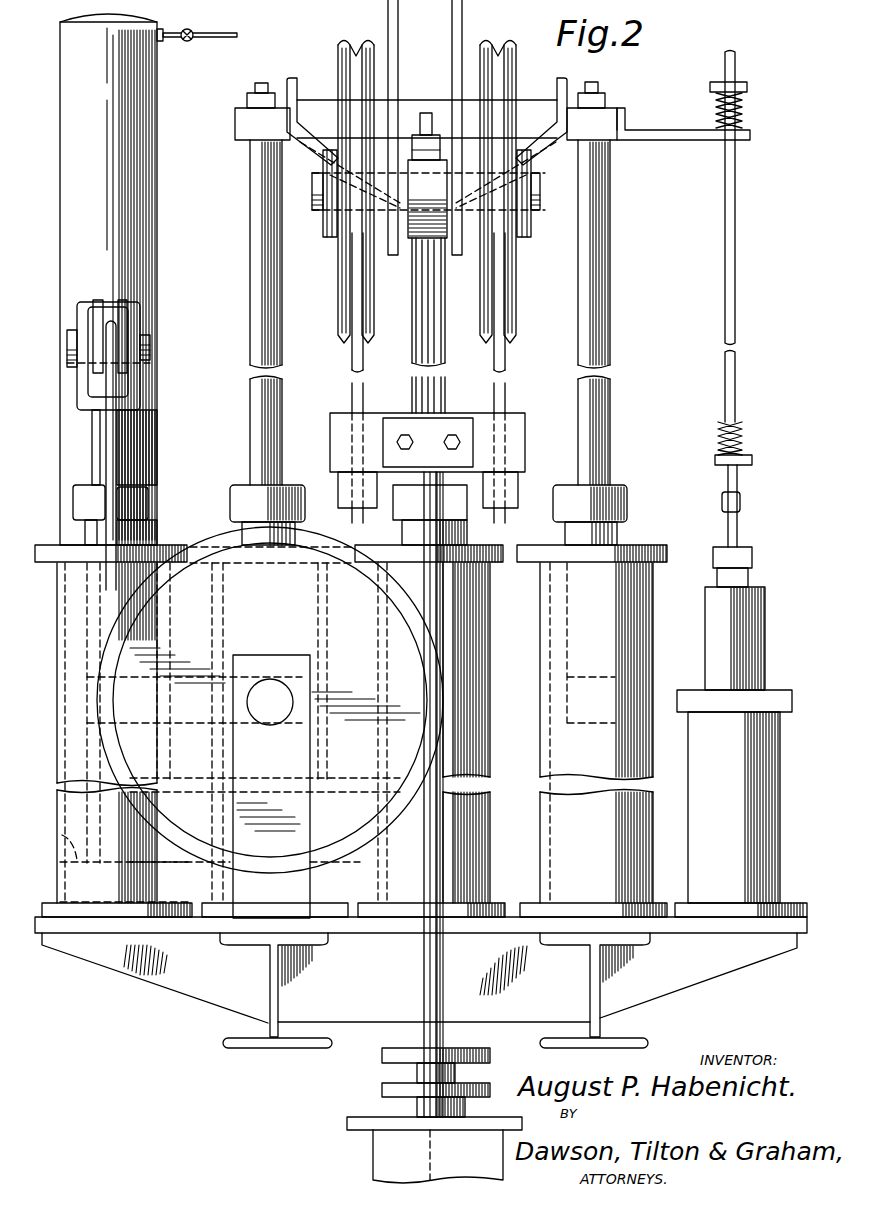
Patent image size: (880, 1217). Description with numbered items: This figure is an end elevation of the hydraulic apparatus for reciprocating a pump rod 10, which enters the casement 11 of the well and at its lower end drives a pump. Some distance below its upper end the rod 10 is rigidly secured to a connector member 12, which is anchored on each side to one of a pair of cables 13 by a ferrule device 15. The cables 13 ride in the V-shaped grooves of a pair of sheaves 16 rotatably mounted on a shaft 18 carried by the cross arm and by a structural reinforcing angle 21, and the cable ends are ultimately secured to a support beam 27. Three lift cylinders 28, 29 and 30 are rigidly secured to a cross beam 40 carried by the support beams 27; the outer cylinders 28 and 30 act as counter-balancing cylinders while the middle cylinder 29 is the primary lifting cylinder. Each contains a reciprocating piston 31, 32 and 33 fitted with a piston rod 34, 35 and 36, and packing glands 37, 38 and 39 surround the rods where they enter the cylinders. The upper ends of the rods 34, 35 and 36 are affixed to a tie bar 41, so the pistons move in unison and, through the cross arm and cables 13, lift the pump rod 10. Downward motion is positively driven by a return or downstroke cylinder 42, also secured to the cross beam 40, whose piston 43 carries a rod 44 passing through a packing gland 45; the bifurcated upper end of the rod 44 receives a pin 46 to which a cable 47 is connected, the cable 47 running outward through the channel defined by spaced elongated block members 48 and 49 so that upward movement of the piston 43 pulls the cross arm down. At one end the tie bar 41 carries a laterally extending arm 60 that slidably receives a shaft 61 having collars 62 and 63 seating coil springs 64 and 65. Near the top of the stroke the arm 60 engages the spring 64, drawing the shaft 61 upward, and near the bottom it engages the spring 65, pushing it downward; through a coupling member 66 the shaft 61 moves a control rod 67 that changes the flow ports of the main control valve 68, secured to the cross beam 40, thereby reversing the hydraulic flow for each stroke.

The pump rod 10 is at (430, 335).
The casement 11 is at (380, 1148).
The connector member 12 is at (520, 437).
The cable 13 is at (362, 365).
The ferrule device 15 is at (340, 497).
The sheave 16 is at (338, 58).
The shaft 18 is at (540, 207).
The structural reinforcing angle 21 is at (388, 22).
The support beam 27 is at (250, 1048).
The lift cylinder 28 is at (653, 840).
The lift cylinder 29 is at (490, 843).
The lift cylinder 30 is at (305, 880).
The piston 31 is at (572, 730).
The piston 32 is at (388, 735).
The piston 33 is at (233, 737).
The piston rod 34 is at (604, 405).
The piston rod 35 is at (436, 352).
The piston rod 36 is at (258, 287).
The packing gland 37 is at (627, 504).
The packing gland 38 is at (455, 521).
The packing gland 39 is at (232, 505).
The cross beam 40 is at (690, 931).
The tie bar 41 is at (240, 122).
The return or downstroke cylinder 42 is at (66, 706).
The piston 43 is at (62, 838).
The rod 44 is at (125, 452).
The packing gland 45 is at (140, 501).
The pin 46 is at (150, 345).
The cable 47 is at (112, 436).
The block member 48 is at (98, 300).
The block member 49 is at (122, 300).
The arm 60 is at (670, 138).
The shaft 61 is at (735, 259).
The collar 62 is at (747, 87).
The collar 63 is at (752, 460).
The coil spring 64 is at (742, 111).
The coil spring 65 is at (742, 438).
The coupling member 66 is at (740, 502).
The control rod 67 is at (737, 528).
The main control valve 68 is at (770, 763).